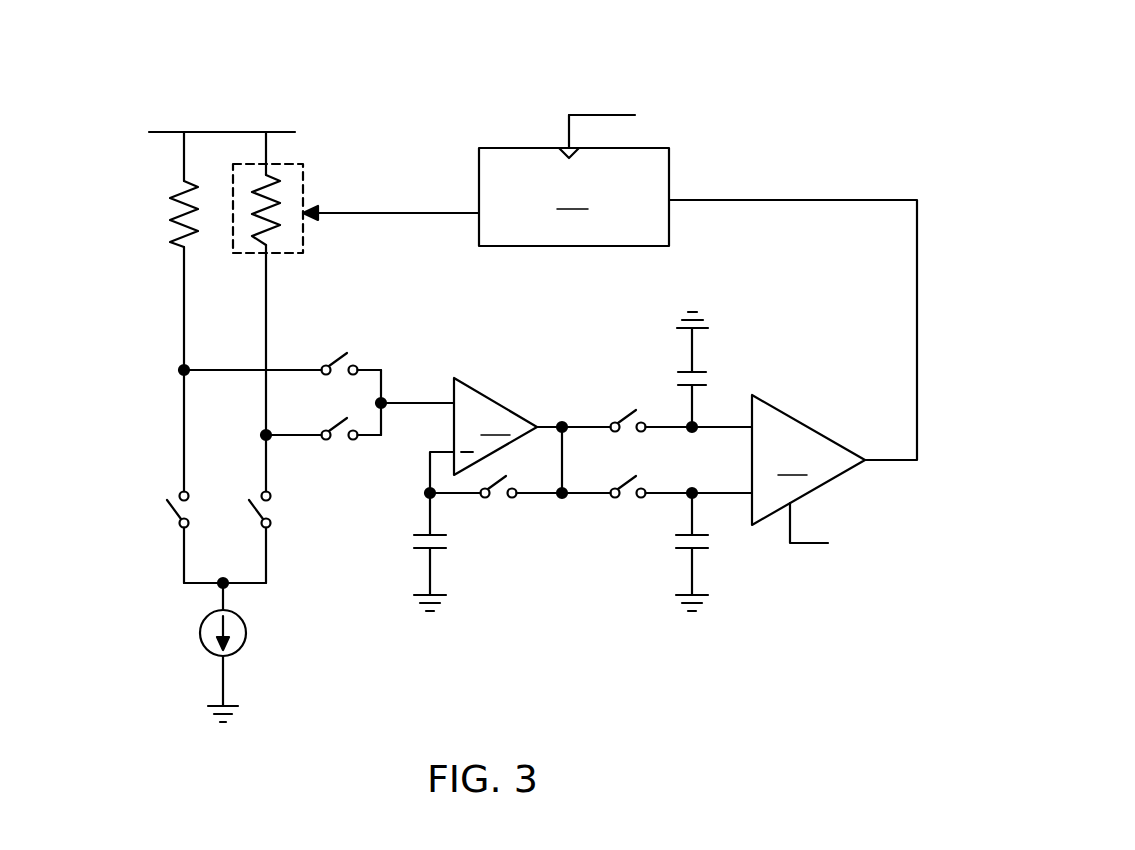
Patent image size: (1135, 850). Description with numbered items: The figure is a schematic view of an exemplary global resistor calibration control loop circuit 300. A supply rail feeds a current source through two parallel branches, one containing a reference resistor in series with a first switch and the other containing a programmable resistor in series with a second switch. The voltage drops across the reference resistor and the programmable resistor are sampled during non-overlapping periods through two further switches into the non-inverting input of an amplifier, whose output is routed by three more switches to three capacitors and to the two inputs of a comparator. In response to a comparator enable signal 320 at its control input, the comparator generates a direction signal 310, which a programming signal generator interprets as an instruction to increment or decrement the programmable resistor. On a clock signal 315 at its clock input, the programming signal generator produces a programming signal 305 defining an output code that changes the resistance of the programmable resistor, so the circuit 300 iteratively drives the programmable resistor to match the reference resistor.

The global resistor calibration control loop circuit 300 is at (506, 364).
The programming signal 305 is at (400, 213).
The direction signal 310 is at (814, 199).
The COMP_INT clock signal 315 is at (568, 114).
The COMP enable signal 320 is at (809, 545).